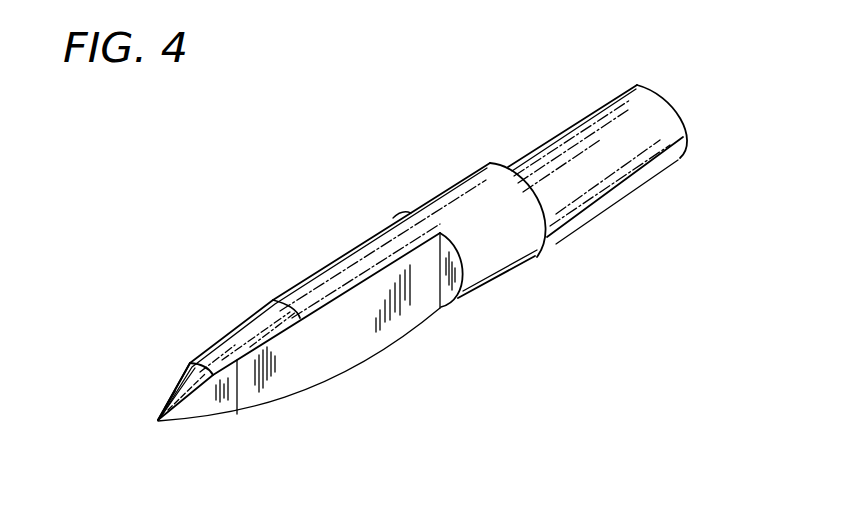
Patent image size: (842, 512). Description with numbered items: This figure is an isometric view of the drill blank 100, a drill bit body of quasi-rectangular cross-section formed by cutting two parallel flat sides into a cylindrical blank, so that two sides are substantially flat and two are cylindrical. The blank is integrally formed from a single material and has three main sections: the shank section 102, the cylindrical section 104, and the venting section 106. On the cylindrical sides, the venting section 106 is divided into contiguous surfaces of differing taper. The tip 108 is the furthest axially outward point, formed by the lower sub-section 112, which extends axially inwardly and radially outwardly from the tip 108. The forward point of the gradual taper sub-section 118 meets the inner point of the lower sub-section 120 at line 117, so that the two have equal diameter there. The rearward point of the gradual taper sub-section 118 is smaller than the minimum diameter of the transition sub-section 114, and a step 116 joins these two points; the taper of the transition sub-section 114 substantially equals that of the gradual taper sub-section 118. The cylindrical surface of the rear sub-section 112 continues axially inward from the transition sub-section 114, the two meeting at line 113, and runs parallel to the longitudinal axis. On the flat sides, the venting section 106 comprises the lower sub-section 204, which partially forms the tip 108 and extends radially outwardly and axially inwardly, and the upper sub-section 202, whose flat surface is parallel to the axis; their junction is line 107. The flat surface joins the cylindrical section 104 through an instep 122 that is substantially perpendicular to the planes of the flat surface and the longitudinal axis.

The drill blank 100 is at (125, 142).
The shank section 102 is at (620, 14).
The cylindrical section 104 is at (458, 113).
The venting section 106 is at (350, 172).
The line 107 is at (237, 414).
The tip 108 is at (157, 421).
The lower sub-section 112 is at (353, 250).
The line 113 is at (303, 319).
The transition sub-section 114 is at (265, 305).
The step 116 is at (243, 322).
The line 117 is at (190, 363).
The gradual taper sub-section 118 is at (215, 343).
The lower sub-section 120 is at (170, 402).
The instep 122 is at (455, 296).
The upper sub-section 202 is at (360, 340).
The lower sub-section 204 is at (204, 405).